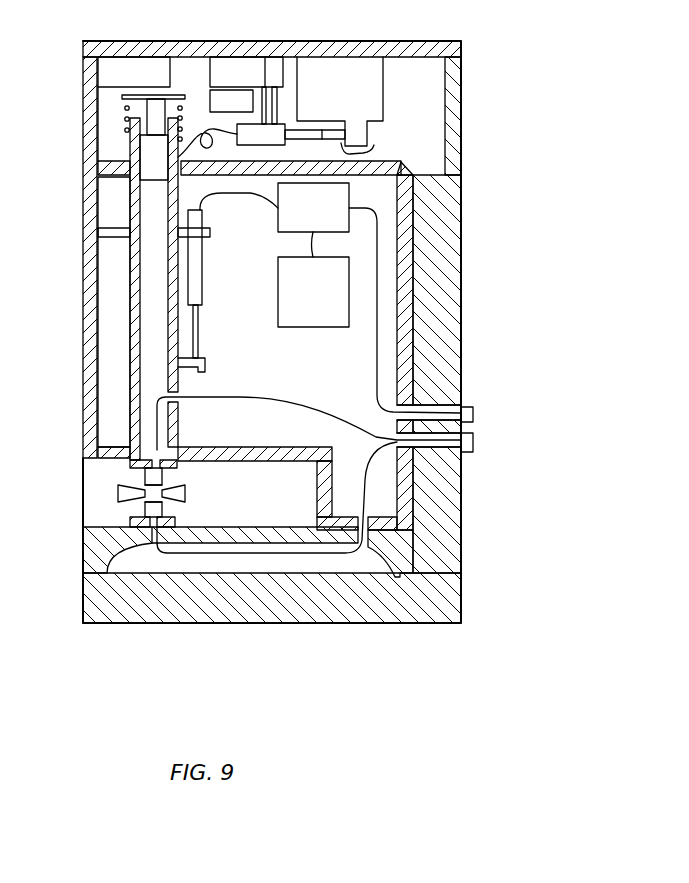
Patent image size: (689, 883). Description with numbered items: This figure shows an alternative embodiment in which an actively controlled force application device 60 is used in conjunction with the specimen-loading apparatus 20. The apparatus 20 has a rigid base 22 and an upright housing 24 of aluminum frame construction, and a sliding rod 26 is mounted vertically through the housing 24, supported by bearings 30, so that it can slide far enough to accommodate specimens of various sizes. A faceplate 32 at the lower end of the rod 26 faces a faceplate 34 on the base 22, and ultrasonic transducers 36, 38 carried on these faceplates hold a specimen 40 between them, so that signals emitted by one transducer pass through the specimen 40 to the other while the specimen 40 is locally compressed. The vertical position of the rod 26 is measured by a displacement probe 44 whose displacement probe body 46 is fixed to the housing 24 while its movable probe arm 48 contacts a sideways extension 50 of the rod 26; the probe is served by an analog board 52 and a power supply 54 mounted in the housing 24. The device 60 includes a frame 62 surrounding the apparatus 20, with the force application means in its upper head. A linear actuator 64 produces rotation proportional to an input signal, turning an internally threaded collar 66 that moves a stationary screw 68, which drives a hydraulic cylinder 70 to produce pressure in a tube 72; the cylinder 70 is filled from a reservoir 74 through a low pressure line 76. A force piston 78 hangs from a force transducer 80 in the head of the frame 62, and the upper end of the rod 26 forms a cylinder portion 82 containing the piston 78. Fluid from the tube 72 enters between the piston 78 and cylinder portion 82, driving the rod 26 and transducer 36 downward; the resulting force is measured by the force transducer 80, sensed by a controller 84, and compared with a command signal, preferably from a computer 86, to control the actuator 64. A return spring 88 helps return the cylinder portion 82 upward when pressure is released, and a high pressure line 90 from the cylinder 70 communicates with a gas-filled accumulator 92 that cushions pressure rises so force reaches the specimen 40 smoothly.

The apparatus 20 is at (464, 221).
The base 22 is at (413, 555).
The housing 24 is at (417, 279).
The sliding rod 26 is at (130, 303).
The bearings 30 is at (128, 178).
The faceplate 32 is at (172, 465).
The faceplate 34 is at (178, 524).
The ultrasonic transducer 36 is at (143, 478).
The ultrasonic transducer 38 is at (143, 513).
The specimen 40 is at (186, 494).
The displacement probe 44 is at (208, 250).
The displacement probe body 46 is at (203, 275).
The movable probe arm 48 is at (199, 326).
The sideways extension 50 is at (203, 368).
The analog board 52 is at (277, 218).
The power supply 54 is at (305, 328).
The force application device 60 is at (464, 31).
The frame 62 is at (462, 78).
The linear actuator 64 is at (385, 77).
The collar 66 is at (370, 153).
The stationary screw 68 is at (308, 128).
The hydraulic cylinder 70 is at (283, 149).
The tube 72 is at (229, 142).
The reservoir 74 is at (238, 54).
The low pressure line 76 is at (279, 98).
The force piston 78 is at (140, 127).
The force transducer 80 is at (137, 92).
The cylinder portion 82 is at (140, 150).
The controller 84 is at (97, 73).
The computer 86 is at (187, 54).
The return spring 88 is at (122, 108).
The high pressure line 90 is at (267, 88).
The accumulator 92 is at (205, 92).